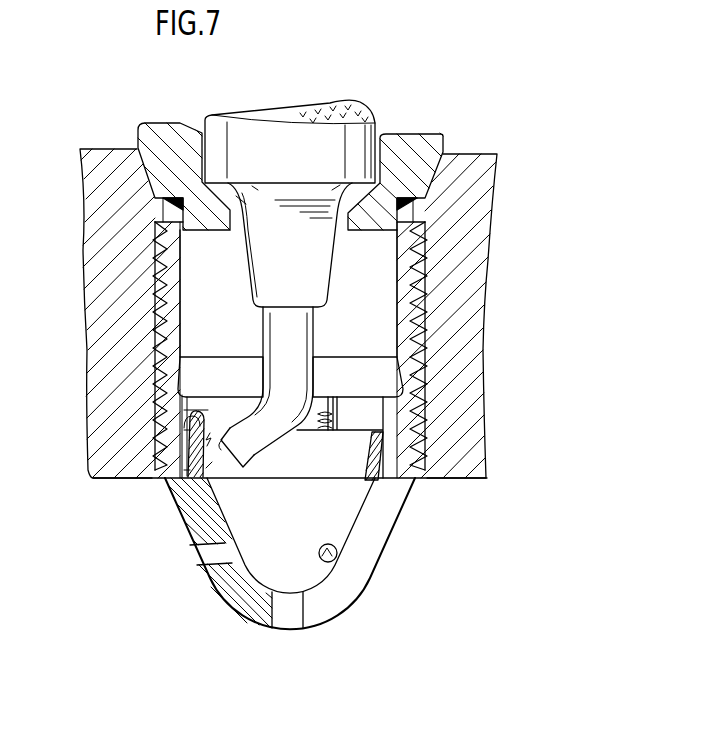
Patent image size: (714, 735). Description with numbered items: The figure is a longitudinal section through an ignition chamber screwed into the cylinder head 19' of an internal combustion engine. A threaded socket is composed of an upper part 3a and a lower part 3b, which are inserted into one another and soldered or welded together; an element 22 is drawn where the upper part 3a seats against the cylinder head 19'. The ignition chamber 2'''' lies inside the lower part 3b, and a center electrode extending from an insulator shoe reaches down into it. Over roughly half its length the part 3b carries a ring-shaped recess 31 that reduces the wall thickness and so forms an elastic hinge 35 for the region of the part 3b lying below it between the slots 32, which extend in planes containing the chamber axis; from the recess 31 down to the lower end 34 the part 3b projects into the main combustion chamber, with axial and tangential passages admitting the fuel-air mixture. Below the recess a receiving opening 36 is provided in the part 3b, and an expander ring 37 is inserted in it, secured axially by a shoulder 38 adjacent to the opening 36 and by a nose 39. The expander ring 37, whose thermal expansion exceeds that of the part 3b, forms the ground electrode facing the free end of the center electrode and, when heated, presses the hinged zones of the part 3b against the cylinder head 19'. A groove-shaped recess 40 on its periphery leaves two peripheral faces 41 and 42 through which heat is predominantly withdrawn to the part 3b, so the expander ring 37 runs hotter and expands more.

The upper part 3a is at (153, 143).
The nut shoulder 22 is at (447, 172).
The cylinder head 19' is at (317, 313).
The lower part 3b is at (432, 257).
The ignition chamber 2'''' is at (335, 350).
The nose 39 is at (343, 387).
The receiving opening 36 is at (370, 414).
The elastic hinge 35 is at (160, 378).
The ring-shaped recess 31 is at (180, 373).
The peripheral face 41 is at (195, 413).
The groove-shaped recess 40 is at (200, 450).
The peripheral face 42 is at (205, 470).
The expander ring 37 is at (360, 453).
The shoulder 38 is at (333, 478).
The slots 32 is at (350, 580).
The lower end 34 is at (247, 597).